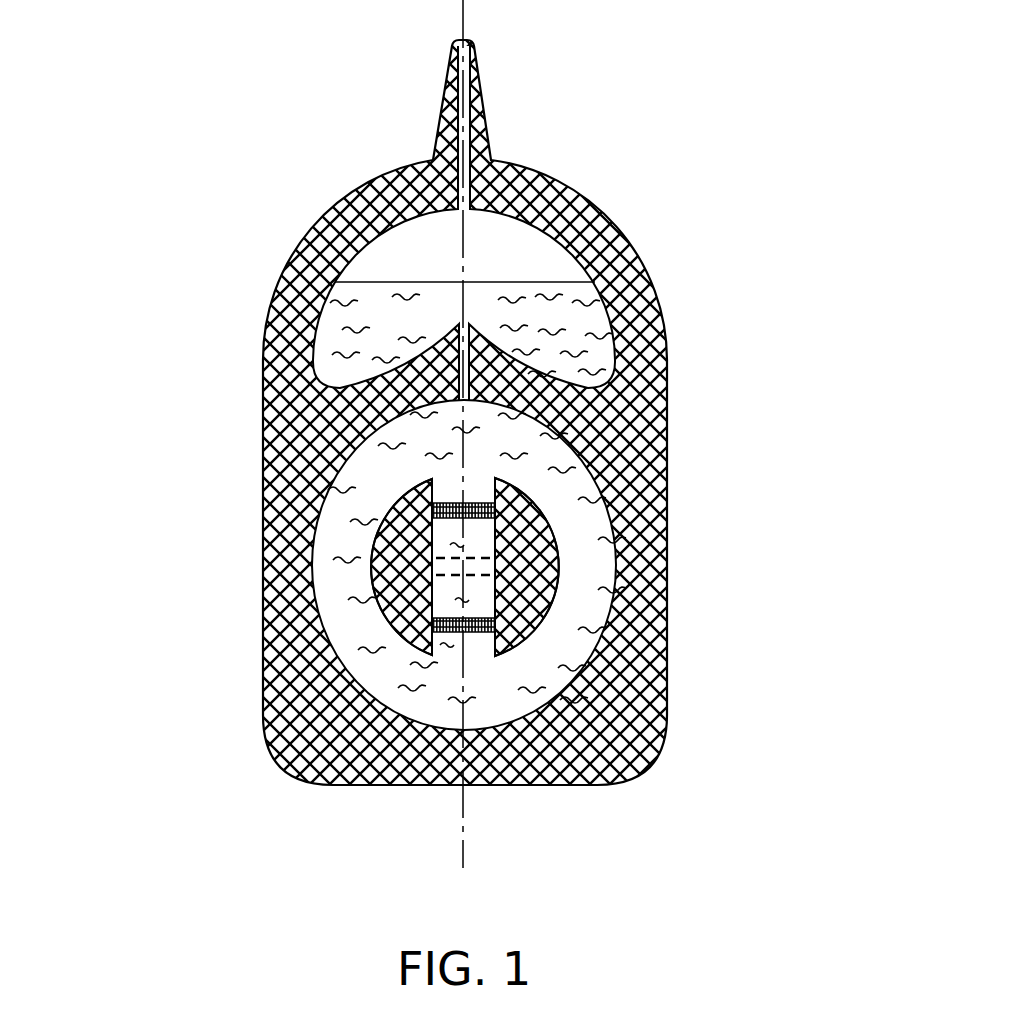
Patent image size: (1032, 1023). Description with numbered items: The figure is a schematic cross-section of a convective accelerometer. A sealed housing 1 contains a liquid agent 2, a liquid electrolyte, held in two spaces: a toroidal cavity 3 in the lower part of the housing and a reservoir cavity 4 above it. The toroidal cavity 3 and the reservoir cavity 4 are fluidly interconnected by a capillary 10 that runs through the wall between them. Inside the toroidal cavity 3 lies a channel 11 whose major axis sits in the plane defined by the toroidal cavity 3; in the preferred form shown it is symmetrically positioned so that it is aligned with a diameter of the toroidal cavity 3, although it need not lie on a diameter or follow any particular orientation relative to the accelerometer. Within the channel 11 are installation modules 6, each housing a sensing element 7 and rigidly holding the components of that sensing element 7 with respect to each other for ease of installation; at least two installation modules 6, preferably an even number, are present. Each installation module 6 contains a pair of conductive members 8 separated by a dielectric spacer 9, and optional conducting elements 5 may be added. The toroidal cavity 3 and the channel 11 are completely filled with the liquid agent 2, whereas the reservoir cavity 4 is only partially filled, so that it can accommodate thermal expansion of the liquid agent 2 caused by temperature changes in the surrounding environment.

The sealed housing 1 is at (616, 232).
The liquid agent 2 is at (338, 337).
The toroidal cavity 3 is at (540, 625).
The reservoir cavity 4 is at (574, 327).
The conducting elements 5 is at (463, 577).
The installation modules 6 is at (477, 635).
The sensing element 7 is at (497, 624).
The conductive members 8 is at (433, 624).
The dielectric spacer 9 is at (497, 617).
The capillary 10 is at (457, 333).
The channel 11 is at (450, 650).